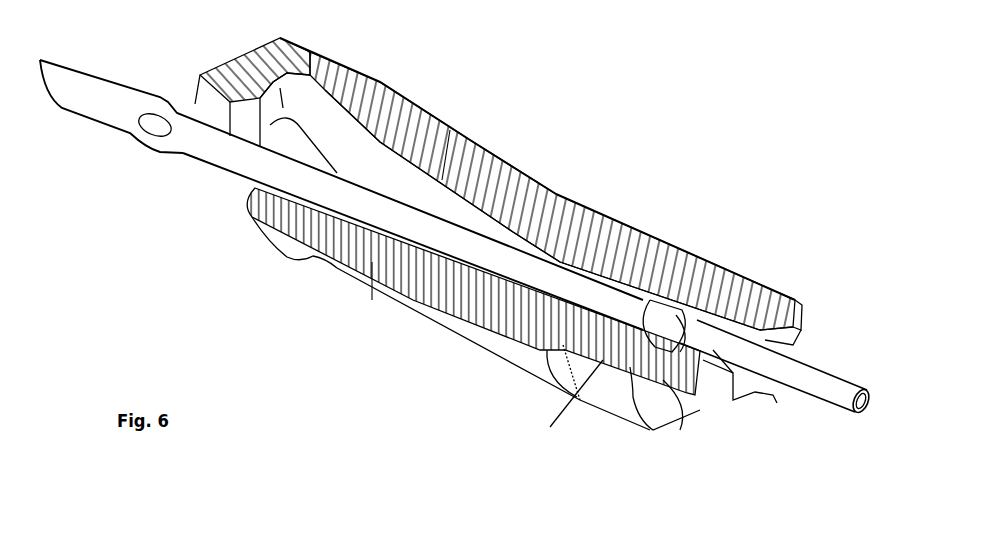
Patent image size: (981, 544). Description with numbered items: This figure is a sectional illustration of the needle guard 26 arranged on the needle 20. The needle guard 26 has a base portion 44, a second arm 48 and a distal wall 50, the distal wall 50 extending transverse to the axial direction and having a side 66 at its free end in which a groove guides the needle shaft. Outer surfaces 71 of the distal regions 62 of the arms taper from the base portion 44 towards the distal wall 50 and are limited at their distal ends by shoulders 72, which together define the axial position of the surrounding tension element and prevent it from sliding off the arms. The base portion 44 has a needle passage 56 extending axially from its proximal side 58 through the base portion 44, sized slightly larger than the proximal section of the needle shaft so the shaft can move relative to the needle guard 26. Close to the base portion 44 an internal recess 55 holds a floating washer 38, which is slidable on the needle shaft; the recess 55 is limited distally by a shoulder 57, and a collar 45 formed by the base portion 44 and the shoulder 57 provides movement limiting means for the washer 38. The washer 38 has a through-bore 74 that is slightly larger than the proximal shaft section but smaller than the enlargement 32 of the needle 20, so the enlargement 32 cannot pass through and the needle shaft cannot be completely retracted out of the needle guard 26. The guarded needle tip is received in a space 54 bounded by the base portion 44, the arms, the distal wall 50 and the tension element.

The needle 20 is at (210, 162).
The needle guard 26 is at (541, 177).
The enlargement 32 is at (157, 95).
The floating washer 38 is at (655, 265).
The base portion 44 is at (727, 273).
The collar 45 is at (753, 280).
The second arm 48 is at (421, 324).
The distal wall 50 is at (230, 60).
The space 54 is at (460, 160).
The internal recess 55 is at (593, 343).
The needle passage 56 is at (737, 377).
The shoulder 57 is at (598, 250).
The proximal side 58 is at (727, 410).
The distal regions 62 is at (381, 83).
The side 66 is at (222, 117).
The tapered outer surfaces 71 is at (445, 130).
The shoulders 72 is at (400, 97).
The through-bore 74 is at (693, 337).